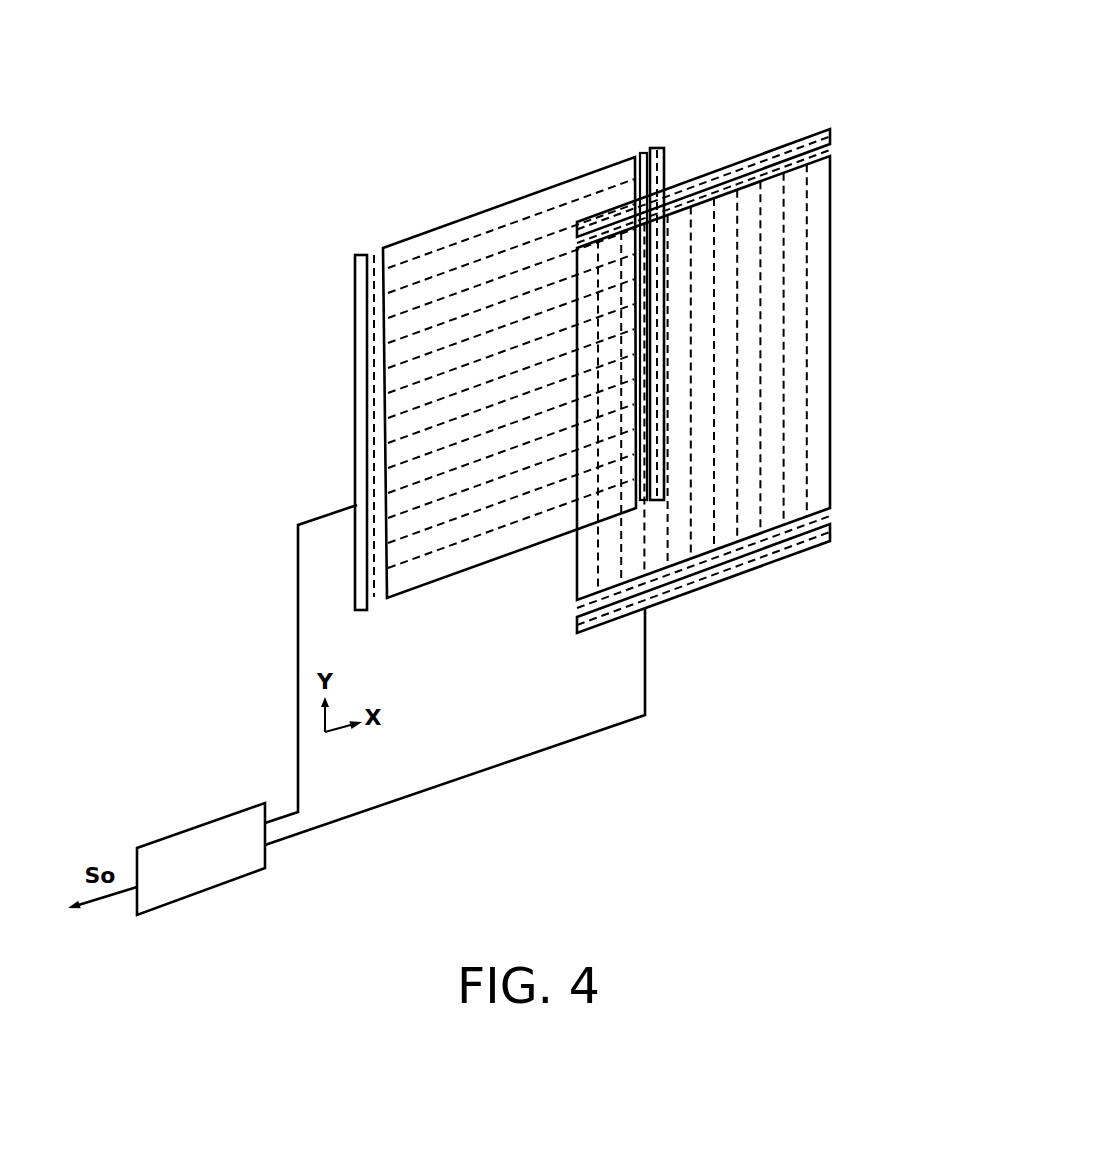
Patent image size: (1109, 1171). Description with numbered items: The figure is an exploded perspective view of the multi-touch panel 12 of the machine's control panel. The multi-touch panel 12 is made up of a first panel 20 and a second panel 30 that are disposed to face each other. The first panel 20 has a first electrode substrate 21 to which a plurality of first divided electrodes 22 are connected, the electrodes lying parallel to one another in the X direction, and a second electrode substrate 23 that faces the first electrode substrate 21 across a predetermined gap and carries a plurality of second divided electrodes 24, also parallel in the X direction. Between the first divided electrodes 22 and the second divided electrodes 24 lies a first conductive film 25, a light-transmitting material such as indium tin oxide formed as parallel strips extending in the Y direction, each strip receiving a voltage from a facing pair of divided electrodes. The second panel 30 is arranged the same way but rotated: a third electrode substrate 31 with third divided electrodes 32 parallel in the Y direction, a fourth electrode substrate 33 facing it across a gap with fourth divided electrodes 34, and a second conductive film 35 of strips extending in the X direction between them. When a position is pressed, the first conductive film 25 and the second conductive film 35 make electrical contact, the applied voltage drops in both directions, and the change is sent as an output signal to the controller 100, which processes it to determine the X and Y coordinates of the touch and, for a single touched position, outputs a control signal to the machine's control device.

The multi-touch panel 12 is at (705, 84).
The first panel 20 is at (890, 205).
The first electrode substrate 21 is at (757, 161).
The first divided electrodes 22 is at (785, 198).
The second electrode substrate 23 is at (733, 572).
The second divided electrodes 24 is at (800, 532).
The first conductive film 25 is at (775, 358).
The second panel 30 is at (456, 217).
The third electrode substrate 31 is at (362, 465).
The third divided electrodes 32 is at (377, 598).
The fourth electrode substrate 33 is at (655, 148).
The fourth divided electrodes 34 is at (641, 153).
The second conductive film 35 is at (513, 292).
The controller 100 is at (178, 870).